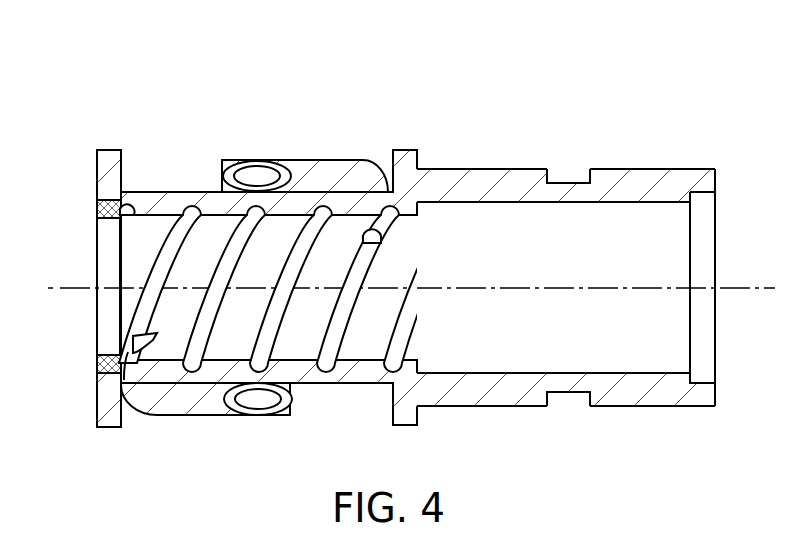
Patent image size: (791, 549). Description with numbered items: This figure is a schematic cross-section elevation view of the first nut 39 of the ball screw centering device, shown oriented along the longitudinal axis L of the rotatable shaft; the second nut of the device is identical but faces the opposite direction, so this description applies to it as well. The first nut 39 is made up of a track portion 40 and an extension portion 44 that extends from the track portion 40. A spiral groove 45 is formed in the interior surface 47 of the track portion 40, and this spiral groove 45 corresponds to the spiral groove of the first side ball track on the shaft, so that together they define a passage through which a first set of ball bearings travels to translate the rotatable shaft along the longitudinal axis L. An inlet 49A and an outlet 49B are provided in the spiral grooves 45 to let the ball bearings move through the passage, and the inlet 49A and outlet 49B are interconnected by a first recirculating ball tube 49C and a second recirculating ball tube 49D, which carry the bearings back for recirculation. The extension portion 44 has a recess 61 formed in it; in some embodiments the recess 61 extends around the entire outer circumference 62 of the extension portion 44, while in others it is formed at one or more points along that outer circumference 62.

The first nut 39 is at (462, 112).
The track portion 40 is at (352, 378).
The extension portion 44 is at (514, 406).
The spiral groove 45 is at (253, 258).
The interior surface 47 is at (223, 227).
The inlet 49A is at (126, 378).
The outlet 49B is at (380, 238).
The first recirculating ball tube 49C is at (316, 171).
The second recirculating ball tube 49D is at (183, 407).
The recess 61 is at (573, 182).
The outer circumference 62 is at (651, 407).
The longitudinal axis L is at (60, 288).